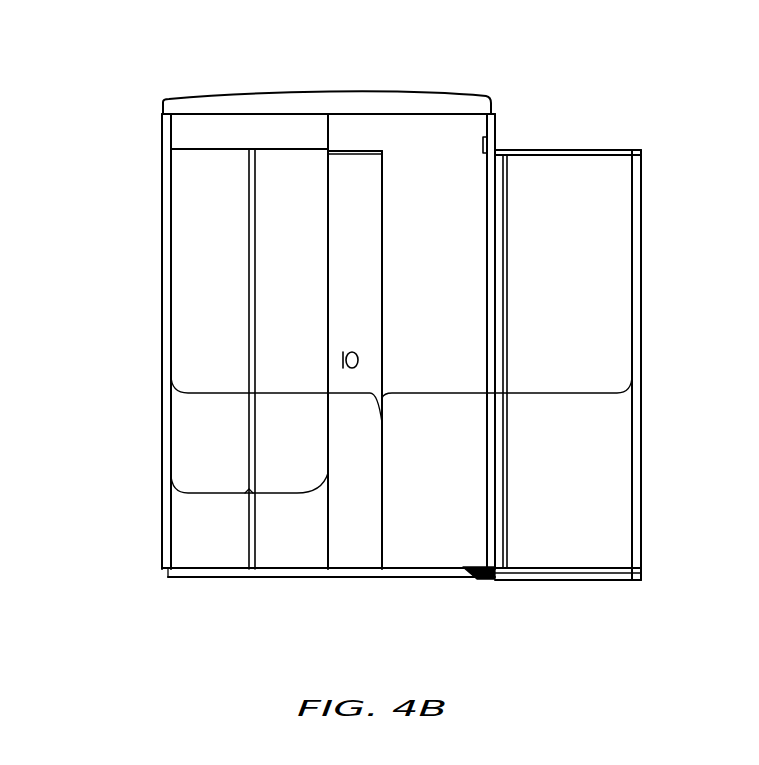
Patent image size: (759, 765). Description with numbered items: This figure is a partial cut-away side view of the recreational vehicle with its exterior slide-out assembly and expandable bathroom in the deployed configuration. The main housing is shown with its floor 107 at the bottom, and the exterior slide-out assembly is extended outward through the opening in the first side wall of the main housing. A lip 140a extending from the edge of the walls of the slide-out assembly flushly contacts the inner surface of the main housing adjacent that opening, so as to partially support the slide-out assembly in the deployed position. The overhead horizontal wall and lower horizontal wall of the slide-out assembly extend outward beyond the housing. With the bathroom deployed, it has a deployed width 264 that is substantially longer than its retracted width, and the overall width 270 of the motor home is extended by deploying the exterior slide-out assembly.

The floor 107 is at (393, 572).
The lip 140a is at (485, 140).
The deployed width 264 is at (247, 507).
The width 270 is at (382, 423).